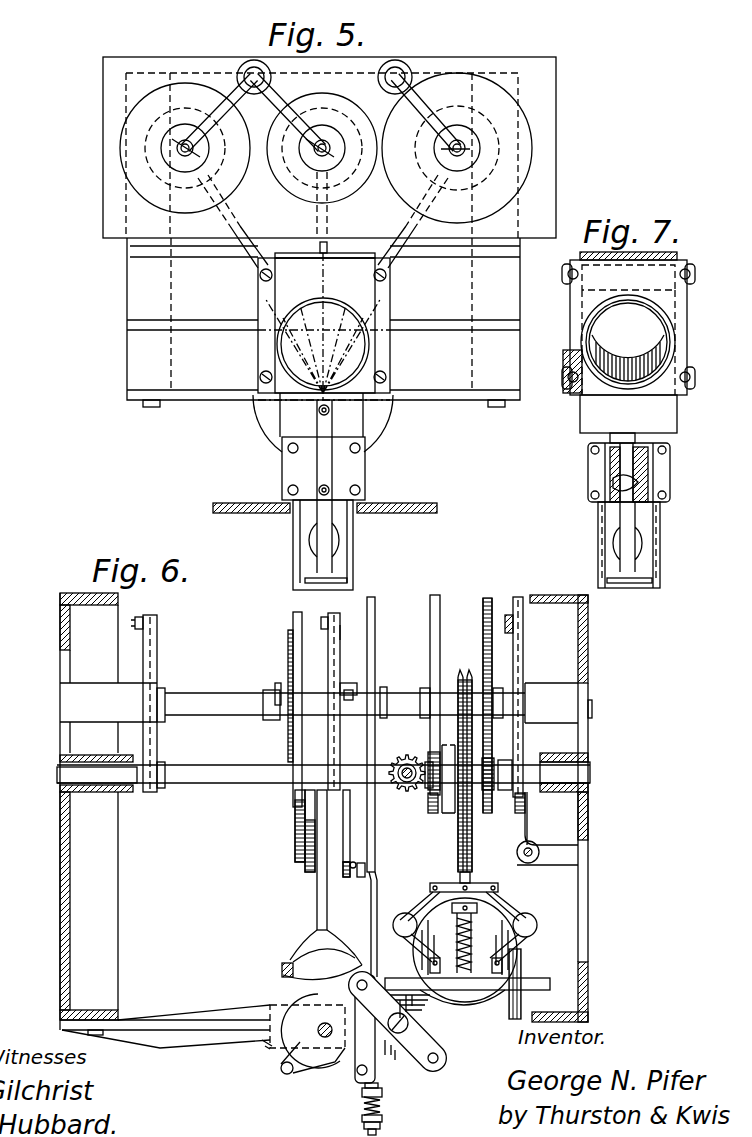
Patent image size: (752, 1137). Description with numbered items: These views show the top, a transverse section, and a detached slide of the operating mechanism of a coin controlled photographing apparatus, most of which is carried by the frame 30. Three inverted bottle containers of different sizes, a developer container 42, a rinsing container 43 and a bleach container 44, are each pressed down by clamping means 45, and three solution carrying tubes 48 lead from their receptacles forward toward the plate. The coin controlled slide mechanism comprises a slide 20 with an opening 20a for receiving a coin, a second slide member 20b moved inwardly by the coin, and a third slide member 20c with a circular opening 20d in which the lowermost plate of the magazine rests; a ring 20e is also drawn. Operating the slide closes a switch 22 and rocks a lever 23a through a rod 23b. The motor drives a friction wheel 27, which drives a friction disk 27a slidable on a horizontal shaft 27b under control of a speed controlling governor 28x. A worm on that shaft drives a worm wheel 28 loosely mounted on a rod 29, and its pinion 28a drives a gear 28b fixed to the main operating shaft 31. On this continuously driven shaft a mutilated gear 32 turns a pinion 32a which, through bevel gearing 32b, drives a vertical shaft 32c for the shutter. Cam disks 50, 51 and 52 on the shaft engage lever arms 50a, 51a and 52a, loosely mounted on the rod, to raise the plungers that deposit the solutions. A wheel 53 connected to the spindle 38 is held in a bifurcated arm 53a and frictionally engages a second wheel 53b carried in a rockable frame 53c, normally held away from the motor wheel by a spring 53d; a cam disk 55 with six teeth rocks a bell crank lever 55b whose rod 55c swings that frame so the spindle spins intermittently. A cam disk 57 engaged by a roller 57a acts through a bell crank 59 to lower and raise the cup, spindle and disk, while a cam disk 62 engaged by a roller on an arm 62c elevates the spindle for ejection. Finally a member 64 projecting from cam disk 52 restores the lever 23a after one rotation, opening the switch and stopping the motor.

In FIG. 5, the slide 20 is at (345, 585).
In FIG. 7, the slide 20 is at (645, 578).
In FIG. 5, the opening 20a is at (337, 545).
In FIG. 7, the opening 20a is at (637, 545).
In FIG. 5, the second slide member 20b is at (335, 505).
In FIG. 7, the second slide member 20b is at (630, 492).
In FIG. 7, the third slide member 20c is at (628, 343).
In FIG. 7, the circular opening 20d is at (628, 342).
In FIG. 7, the ring seat 20e is at (648, 340).
In FIG. 5, the switch 22 is at (362, 470).
In FIG. 6, the lever 23a is at (347, 855).
In FIG. 6, the rod 23b is at (355, 877).
In FIG. 6, the friction wheel 27 is at (520, 962).
In FIG. 6, the friction disk 27a is at (513, 990).
In FIG. 6, the horizontal shaft 27b is at (468, 880).
In FIG. 6, the worm wheel 28 is at (460, 858).
In FIG. 6, the pinion 28a is at (500, 800).
In FIG. 6, the gear 28b is at (483, 612).
In FIG. 6, the speed controlling governor 28x is at (513, 900).
In FIG. 6, the rod 29 is at (220, 778).
In FIG. 5, the frame 30 is at (128, 368).
In FIG. 6, the frame 30 is at (60, 830).
In FIG. 6, the main operating shaft 31 is at (400, 698).
In FIG. 6, the mutilated gear 32 is at (430, 628).
In FIG. 6, the pinion 32a is at (428, 757).
In FIG. 6, the bevel gearing 32b is at (410, 807).
In FIG. 6, the vertical shaft 32c is at (402, 762).
In FIG. 6, the spindle 38 is at (323, 1023).
In FIG. 5, the container 42 is at (125, 148).
In FIG. 5, the container 43 is at (532, 147).
In FIG. 5, the container 44 is at (340, 100).
In FIG. 5, the clamping means 45 is at (218, 140).
In FIG. 5, the solution carrying tubes 48 is at (246, 265).
In FIG. 6, the cam disk 50 is at (157, 665).
In FIG. 6, the lever arm 50a is at (152, 615).
In FIG. 6, the cam disk 51 is at (520, 597).
In FIG. 6, the lever arm 51a is at (518, 658).
In FIG. 6, the cam disk 52 is at (335, 690).
In FIG. 6, the lever arm 52a is at (338, 633).
In FIG. 6, the wheel 53 is at (330, 1066).
In FIG. 6, the bifurcated arm 53a is at (223, 1037).
In FIG. 6, the second wheel 53b is at (420, 1065).
In FIG. 6, the frame 53c is at (360, 1080).
In FIG. 6, the spring 53d is at (268, 1020).
In FIG. 6, the cam disk 55 is at (371, 607).
In FIG. 6, the lever 55b is at (374, 853).
In FIG. 6, the rod 55c is at (375, 877).
In FIG. 6, the cam disk 57 is at (293, 617).
In FIG. 6, the roller 57a is at (297, 850).
In FIG. 6, the bell crank 59 is at (317, 924).
In FIG. 6, the cam disk 62 is at (288, 745).
In FIG. 6, the arm 62c is at (278, 690).
In FIG. 6, the member 64 is at (355, 687).